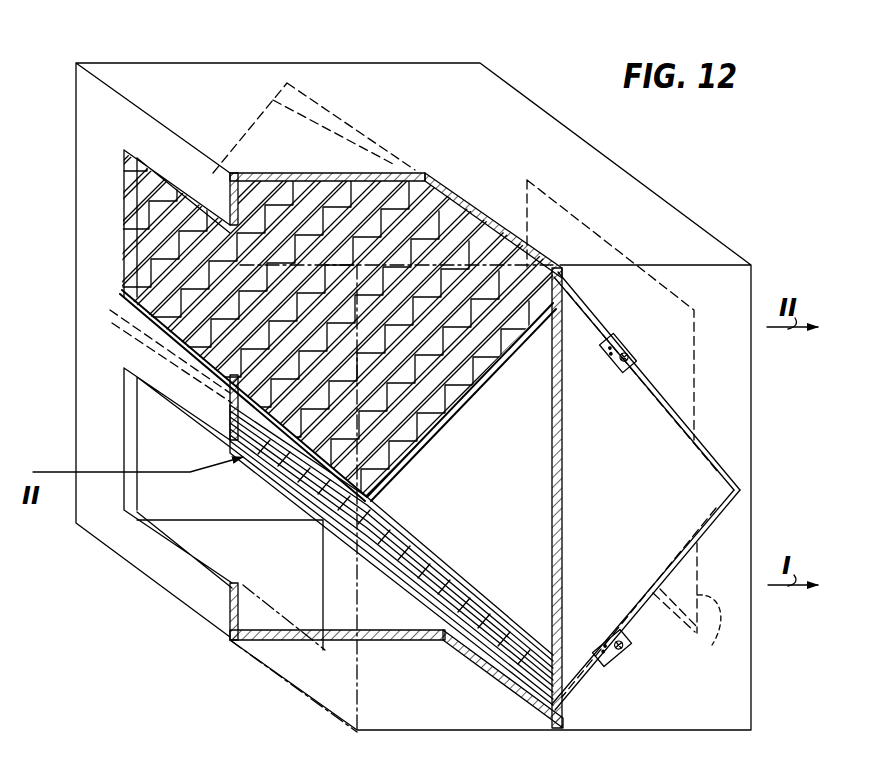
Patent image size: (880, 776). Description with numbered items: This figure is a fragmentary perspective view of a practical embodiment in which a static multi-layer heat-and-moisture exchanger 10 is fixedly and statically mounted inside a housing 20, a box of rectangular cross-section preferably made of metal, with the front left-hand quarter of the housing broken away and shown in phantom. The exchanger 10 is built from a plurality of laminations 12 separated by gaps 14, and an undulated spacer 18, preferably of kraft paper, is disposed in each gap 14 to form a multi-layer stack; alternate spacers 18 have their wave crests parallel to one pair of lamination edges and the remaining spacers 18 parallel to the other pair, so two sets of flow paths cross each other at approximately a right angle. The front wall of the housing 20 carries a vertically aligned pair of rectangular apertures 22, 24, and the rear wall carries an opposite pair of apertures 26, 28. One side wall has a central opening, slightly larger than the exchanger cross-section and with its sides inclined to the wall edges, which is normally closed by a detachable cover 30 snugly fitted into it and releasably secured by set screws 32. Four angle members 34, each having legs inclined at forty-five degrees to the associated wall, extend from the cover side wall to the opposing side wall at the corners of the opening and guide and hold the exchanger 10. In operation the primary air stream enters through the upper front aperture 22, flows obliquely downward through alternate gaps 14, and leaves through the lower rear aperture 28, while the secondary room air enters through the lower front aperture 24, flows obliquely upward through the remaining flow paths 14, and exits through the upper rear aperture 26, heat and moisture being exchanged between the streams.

The static multi-layer heat-and-moisture exchanger 10 is at (33, 233).
The laminations 12 is at (347, 195).
The gaps 14 is at (213, 228).
The undulated spacer 18 is at (168, 279).
The housing 20 is at (548, 128).
The upper aperture on front wall 22 is at (145, 189).
The lower aperture on front wall 24 is at (150, 413).
The upper aperture on rear wall 26 is at (688, 405).
The lower aperture on rear wall 28 is at (697, 640).
The detachable cover 30 is at (693, 516).
The set screws 32 is at (613, 340).
The angle members 34 is at (478, 228).